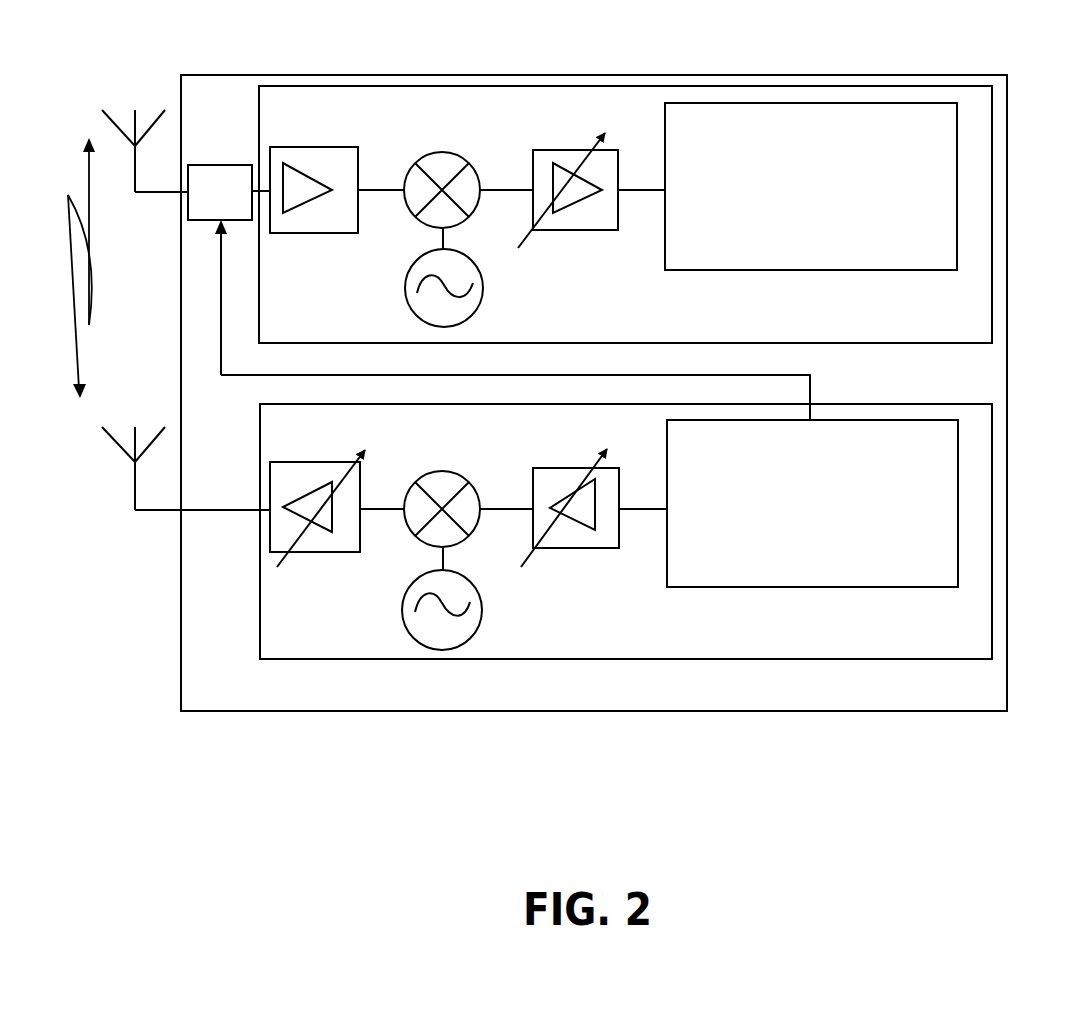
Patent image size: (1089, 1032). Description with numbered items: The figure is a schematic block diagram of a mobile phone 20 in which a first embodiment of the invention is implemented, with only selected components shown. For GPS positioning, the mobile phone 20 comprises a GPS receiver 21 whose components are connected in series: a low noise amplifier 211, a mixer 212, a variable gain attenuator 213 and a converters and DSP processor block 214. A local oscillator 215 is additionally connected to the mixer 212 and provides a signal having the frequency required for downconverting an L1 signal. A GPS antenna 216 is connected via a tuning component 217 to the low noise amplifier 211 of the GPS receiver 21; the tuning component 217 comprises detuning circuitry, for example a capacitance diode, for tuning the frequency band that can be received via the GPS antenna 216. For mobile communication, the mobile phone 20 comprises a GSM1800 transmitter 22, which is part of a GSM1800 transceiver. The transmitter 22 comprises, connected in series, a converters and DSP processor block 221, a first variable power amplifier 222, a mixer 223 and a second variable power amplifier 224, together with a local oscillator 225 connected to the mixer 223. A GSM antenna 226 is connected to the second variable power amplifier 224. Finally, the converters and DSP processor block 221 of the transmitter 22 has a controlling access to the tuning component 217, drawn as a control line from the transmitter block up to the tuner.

The mobile phone 20 is at (984, 382).
The GPS receiver 21 is at (977, 186).
The GSM1800 transmitter 22 is at (975, 517).
The low noise amplifier 211 is at (320, 160).
The mixer 212 is at (433, 162).
The variable gain attenuator 213 is at (570, 160).
The converters and DSP processor block 214 is at (791, 132).
The local oscillator 215 is at (467, 263).
The GPS antenna 216 is at (118, 123).
The tuning component 217 is at (217, 175).
The converters and DSP processor block 221 is at (707, 577).
The first variable power amplifier 222 is at (576, 537).
The mixer 223 is at (468, 528).
The second variable power amplifier 224 is at (313, 540).
The local oscillator 225 is at (450, 633).
The GSM antenna 226 is at (115, 447).